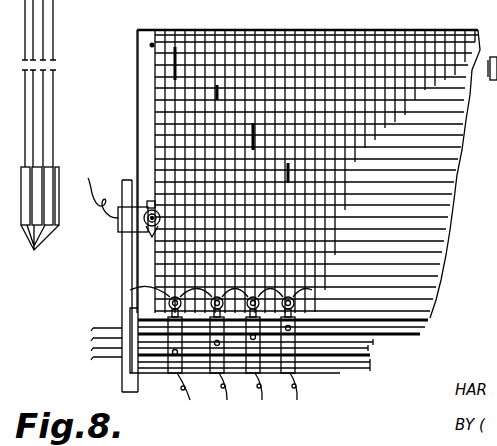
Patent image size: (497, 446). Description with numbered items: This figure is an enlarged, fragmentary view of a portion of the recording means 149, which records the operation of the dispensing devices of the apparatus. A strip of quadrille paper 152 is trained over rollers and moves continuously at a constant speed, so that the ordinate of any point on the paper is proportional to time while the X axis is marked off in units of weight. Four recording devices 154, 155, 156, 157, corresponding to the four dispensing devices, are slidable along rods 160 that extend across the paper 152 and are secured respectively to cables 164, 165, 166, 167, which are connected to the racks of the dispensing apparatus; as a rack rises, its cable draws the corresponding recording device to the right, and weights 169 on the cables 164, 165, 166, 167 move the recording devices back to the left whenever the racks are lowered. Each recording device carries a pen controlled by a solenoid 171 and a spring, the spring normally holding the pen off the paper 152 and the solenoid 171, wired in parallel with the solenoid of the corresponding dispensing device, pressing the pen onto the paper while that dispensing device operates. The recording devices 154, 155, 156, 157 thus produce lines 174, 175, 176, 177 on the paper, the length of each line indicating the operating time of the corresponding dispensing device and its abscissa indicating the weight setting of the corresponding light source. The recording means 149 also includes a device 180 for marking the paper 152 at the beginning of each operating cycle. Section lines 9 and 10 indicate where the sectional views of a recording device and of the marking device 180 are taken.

The section line 9- 9 is at (175, 420).
The section line 10- 10 is at (155, 250).
The recording means 149 is at (358, 20).
The strip of quadrille paper 152 is at (418, 75).
The recording device 154 is at (163, 392).
The recording device 155 is at (215, 421).
The recording device 156 is at (242, 408).
The recording device 157 is at (285, 374).
The rods 160 is at (328, 414).
The cable 164 is at (374, 340).
The cable 165 is at (366, 346).
The cable 166 is at (355, 363).
The cable 167 is at (327, 356).
The weights 169 is at (33, 136).
The solenoid 171 is at (130, 290).
The line 174 is at (172, 68).
The line 175 is at (216, 100).
The line 176 is at (252, 128).
The line 177 is at (287, 173).
The marking device 180 is at (130, 222).